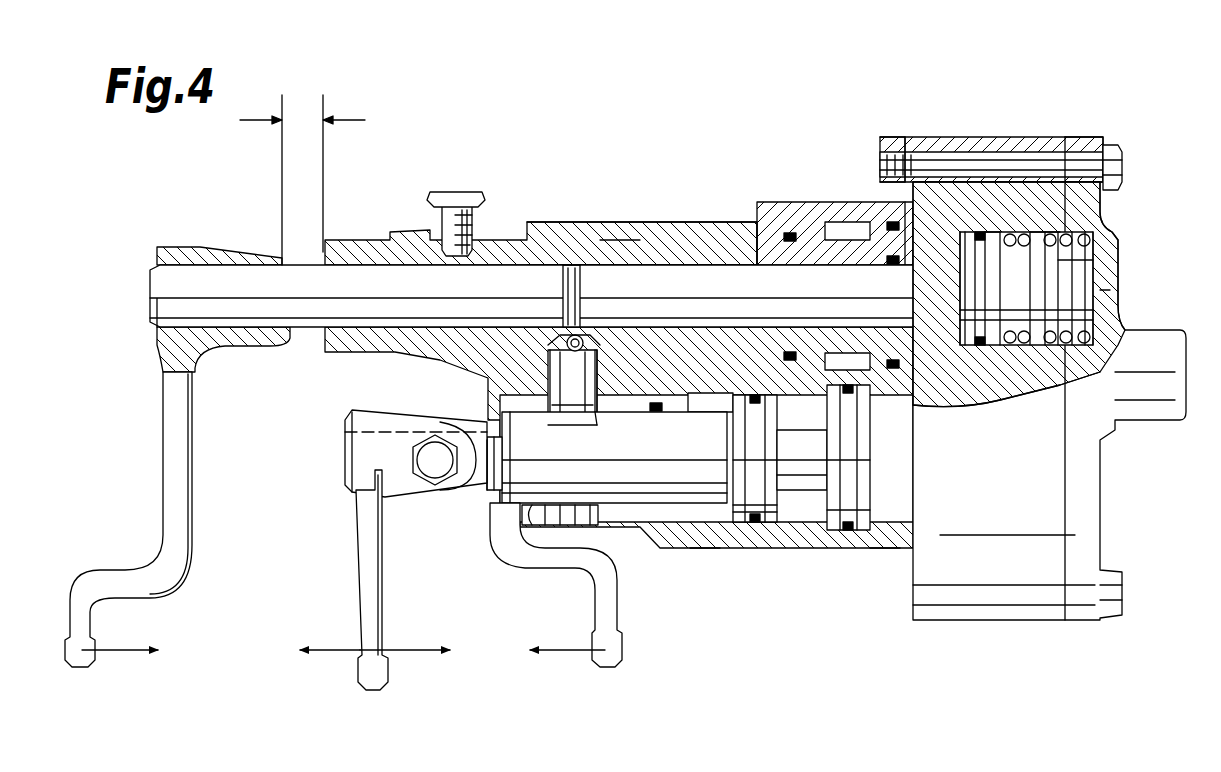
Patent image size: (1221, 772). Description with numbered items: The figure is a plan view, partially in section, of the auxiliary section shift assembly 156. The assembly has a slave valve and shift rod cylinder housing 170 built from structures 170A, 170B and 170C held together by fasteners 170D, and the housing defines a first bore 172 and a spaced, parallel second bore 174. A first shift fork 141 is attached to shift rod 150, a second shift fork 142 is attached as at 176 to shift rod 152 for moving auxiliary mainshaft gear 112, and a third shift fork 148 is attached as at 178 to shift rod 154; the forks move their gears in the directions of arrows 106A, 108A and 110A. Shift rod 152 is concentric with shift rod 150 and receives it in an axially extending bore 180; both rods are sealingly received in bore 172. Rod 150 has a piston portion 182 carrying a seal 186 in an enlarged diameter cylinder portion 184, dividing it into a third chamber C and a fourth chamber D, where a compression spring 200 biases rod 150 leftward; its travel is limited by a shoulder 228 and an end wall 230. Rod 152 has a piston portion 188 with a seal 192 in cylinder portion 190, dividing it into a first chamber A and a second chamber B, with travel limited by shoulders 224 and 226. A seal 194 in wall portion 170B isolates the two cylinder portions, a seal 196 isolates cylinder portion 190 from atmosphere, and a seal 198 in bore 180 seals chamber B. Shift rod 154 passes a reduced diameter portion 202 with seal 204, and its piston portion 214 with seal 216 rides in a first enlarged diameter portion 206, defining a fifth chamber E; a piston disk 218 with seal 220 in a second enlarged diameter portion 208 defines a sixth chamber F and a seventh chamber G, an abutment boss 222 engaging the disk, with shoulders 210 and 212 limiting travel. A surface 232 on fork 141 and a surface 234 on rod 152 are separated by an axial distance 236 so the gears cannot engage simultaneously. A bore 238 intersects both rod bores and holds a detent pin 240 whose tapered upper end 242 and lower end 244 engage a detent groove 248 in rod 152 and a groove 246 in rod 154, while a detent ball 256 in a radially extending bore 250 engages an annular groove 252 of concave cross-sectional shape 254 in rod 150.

The auxiliary section shift assembly 156 is at (770, 106).
The axial distance 236 is at (300, 115).
The housing structure 170A is at (1080, 142).
The housing wall portion 170B is at (985, 142).
The housing structure 170C is at (890, 137).
The fastener 170D is at (1125, 175).
The attachment of shift fork to shift rod 176 is at (472, 222).
The first bore 172 is at (565, 240).
The concave cross-sectional shape 254 is at (600, 240).
The slave valve and shift rod cylinder housing 170 is at (680, 233).
The enlarged diameter cylinder portion 190 is at (790, 232).
The piston portion 188 is at (830, 240).
The seal 192 is at (885, 232).
The shift rod 150 is at (285, 262).
The shift rod 152 is at (333, 250).
The seal 186 is at (922, 240).
The piston portion 182 is at (980, 243).
The enlarged diameter cylinder portion 184 is at (1040, 240).
The compression spring 200 is at (1090, 235).
The fourth chamber D is at (1060, 265).
The end wall 230 is at (1100, 290).
The axially extending bore 180 is at (338, 268).
The detent ball 256 is at (548, 345).
The annular groove 252 is at (560, 283).
The radially extending bore 250 is at (601, 295).
The seal 196 is at (790, 240).
The first chamber A is at (842, 358).
The second chamber B is at (915, 335).
The shoulder 228 is at (1000, 245).
The detent groove 248 is at (585, 343).
The inwardly tapered upper end 242 is at (620, 350).
The first enlarged diameter portion 206 is at (750, 350).
The shoulder 224 is at (828, 228).
The seal 198 is at (880, 270).
The seal 194 is at (965, 305).
The leftwardly facing surface or shoulder 232 is at (292, 342).
The leftwardly facing surface or shoulder 234 is at (332, 342).
The bore 238 is at (597, 378).
The seal 204 is at (660, 403).
The reduced diameter portion 202 is at (735, 392).
The third chamber C is at (1020, 355).
The shoulder 226 is at (940, 385).
The detent pin 240 is at (545, 395).
The groove 246 is at (567, 426).
The inwardly tapered lower end 244 is at (598, 420).
The second bore 174 is at (645, 410).
The abutment boss 222 is at (775, 445).
The piston disk 218 is at (853, 420).
The seventh chamber G is at (880, 456).
The shift rod 154 is at (345, 465).
The fifth chamber E is at (720, 505).
The sixth chamber F is at (840, 510).
The seal 220 is at (905, 507).
The first shift fork 141 is at (185, 525).
The attachment of shift fork to shift rod 178 is at (433, 478).
The shoulder 212 is at (715, 548).
The piston portion 214 is at (742, 525).
The seal 216 is at (760, 522).
The second enlarged diameter portion 208 is at (867, 548).
The shoulder 210 is at (835, 530).
The third shift fork 148 is at (378, 585).
The arrow 106A is at (110, 648).
The arrow 108A is at (325, 648).
The arrow 110A is at (396, 648).
The auxiliary mainshaft gear 112 is at (570, 648).
The second shift fork 142 is at (617, 612).